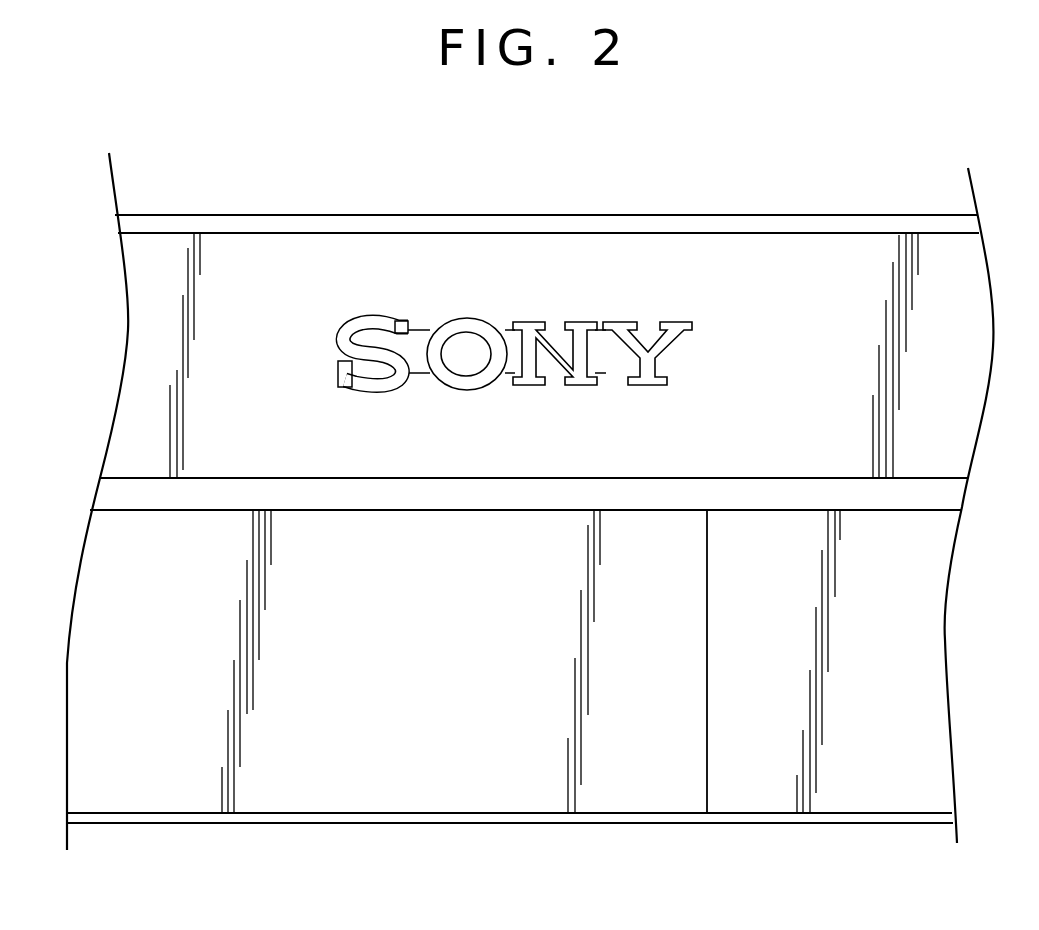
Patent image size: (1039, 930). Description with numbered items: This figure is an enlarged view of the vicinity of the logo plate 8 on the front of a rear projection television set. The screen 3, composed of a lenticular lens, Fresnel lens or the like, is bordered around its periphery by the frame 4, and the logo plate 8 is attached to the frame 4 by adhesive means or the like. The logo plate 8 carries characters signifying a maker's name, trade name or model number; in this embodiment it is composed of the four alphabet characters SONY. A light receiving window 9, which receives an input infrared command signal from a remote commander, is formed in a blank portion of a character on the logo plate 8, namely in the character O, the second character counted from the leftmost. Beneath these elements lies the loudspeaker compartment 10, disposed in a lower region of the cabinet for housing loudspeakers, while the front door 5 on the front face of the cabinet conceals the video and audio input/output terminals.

The screen 3 is at (752, 164).
The frame 4 is at (239, 255).
The front door 5 is at (915, 632).
The logo plate 8 is at (515, 322).
The light receiving window 9 is at (470, 342).
The loudspeaker compartment 10 is at (424, 853).